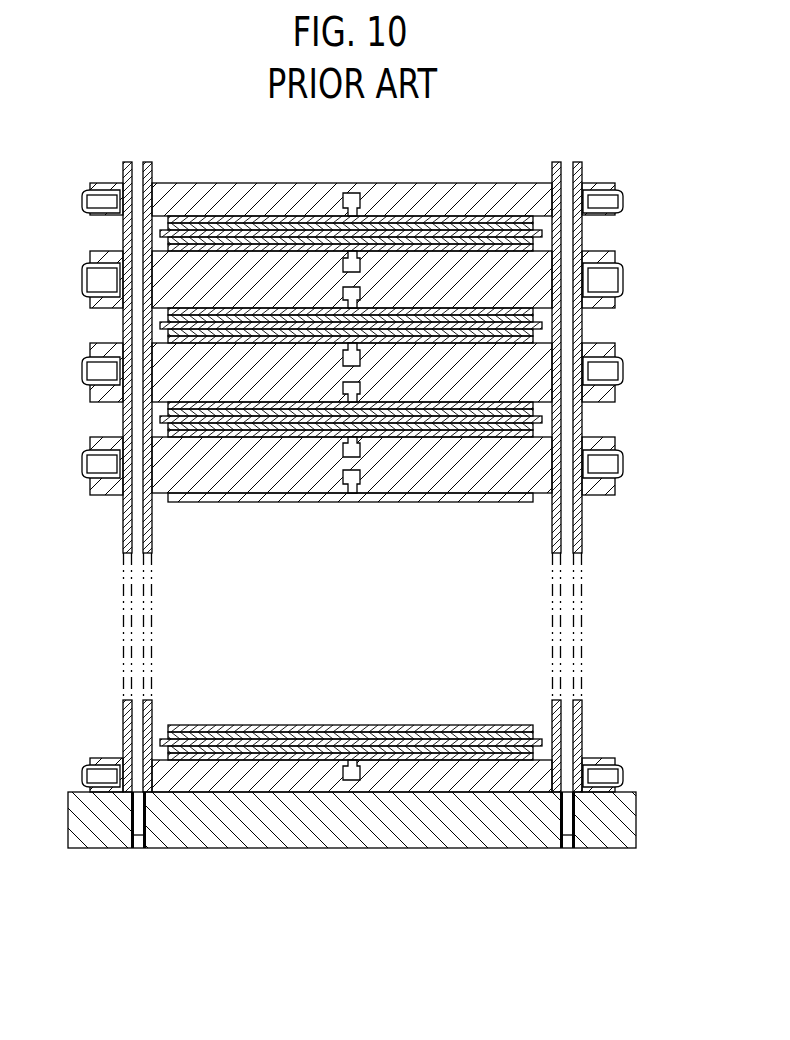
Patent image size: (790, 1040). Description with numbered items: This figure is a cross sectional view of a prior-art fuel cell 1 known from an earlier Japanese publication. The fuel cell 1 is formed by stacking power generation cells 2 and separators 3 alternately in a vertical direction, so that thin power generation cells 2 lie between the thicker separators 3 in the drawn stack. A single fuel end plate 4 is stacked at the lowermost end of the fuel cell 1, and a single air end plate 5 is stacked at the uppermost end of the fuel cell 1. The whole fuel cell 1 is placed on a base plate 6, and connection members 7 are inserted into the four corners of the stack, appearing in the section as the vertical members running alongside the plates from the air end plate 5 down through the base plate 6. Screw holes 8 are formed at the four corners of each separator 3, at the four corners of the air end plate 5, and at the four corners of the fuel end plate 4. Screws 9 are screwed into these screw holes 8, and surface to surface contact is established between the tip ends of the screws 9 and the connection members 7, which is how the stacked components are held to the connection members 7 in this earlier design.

The fuel cell 1 is at (486, 120).
The power generation cell 2 is at (545, 232).
The separator 3 is at (300, 373).
The fuel end plate 4 is at (270, 780).
The air end plate 5 is at (263, 183).
The base plate 6 is at (377, 850).
The connection member 7 is at (122, 417).
The screw hole 8 is at (612, 462).
The screw 9 is at (620, 462).